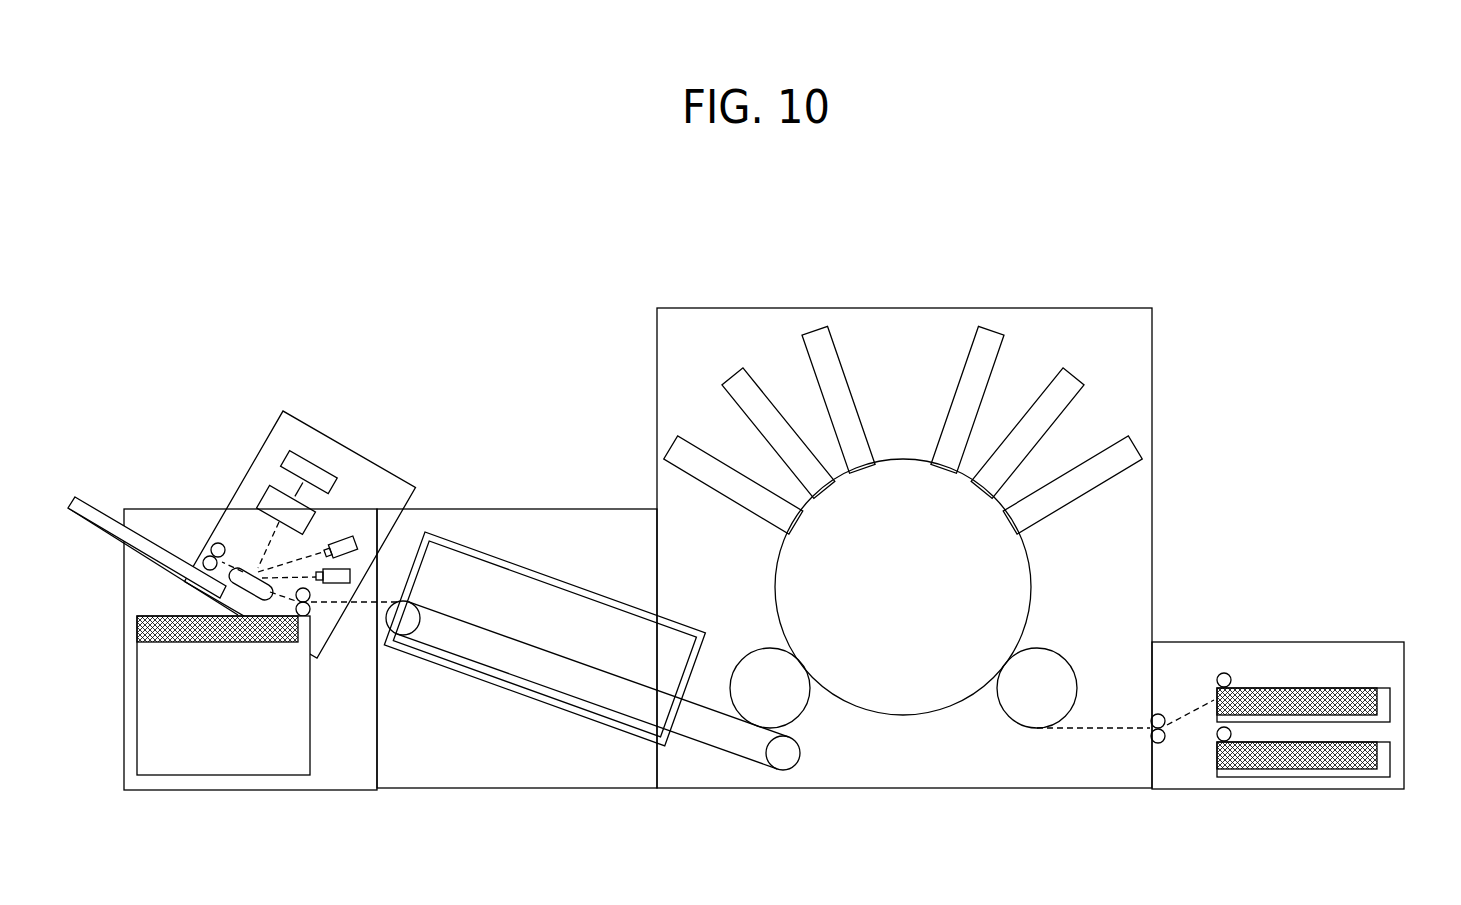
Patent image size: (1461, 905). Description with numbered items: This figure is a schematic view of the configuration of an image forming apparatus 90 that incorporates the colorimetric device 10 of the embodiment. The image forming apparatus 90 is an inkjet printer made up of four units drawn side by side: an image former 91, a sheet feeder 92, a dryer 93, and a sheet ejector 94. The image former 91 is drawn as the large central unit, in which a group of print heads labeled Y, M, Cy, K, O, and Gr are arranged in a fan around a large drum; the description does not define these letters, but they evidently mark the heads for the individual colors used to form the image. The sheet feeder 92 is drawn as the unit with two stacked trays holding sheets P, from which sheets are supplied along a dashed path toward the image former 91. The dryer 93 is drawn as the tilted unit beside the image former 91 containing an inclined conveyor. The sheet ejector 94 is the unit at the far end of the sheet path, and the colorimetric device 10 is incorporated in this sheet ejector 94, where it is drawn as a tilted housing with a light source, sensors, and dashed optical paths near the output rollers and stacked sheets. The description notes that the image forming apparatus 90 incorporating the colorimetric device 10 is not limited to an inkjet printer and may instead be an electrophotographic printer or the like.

The image forming apparatus 90 is at (975, 241).
The image former 91 is at (1058, 307).
The sheet feeder 92 is at (1338, 641).
The dryer 93 is at (565, 508).
The sheet ejector 94 is at (137, 508).
The colorimetric device 10 is at (292, 386).
The yellow head Y is at (818, 383).
The magenta head M is at (995, 382).
The cyan head Cy is at (1060, 422).
The black head K is at (1080, 498).
The orange head O is at (748, 424).
The green head Gr is at (727, 498).
The printed sheet P is at (1380, 703).